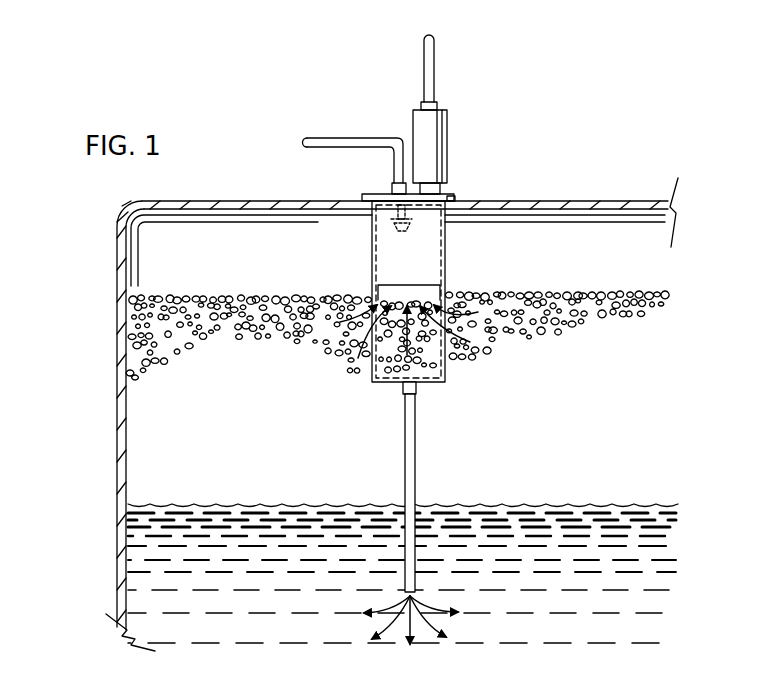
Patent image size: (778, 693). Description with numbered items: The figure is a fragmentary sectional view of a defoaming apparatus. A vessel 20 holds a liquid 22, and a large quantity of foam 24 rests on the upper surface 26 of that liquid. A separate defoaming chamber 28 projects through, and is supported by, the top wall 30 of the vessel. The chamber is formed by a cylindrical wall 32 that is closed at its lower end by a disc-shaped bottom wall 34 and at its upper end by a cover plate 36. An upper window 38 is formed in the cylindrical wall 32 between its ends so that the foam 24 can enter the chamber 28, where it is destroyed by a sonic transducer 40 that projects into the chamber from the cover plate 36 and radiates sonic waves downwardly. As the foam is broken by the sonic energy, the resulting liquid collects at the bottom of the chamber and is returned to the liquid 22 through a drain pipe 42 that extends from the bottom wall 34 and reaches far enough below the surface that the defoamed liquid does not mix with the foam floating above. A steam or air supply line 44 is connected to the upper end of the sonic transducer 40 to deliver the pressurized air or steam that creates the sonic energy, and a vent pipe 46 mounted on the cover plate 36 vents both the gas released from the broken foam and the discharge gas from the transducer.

The vessel 20 is at (117, 428).
The liquid 22 is at (222, 607).
The foam 24 is at (180, 296).
The upper surface 26 is at (190, 508).
The defoaming chamber 28 is at (450, 232).
The top wall 30 is at (575, 200).
The cylindrical wall 32 is at (372, 267).
The bottom wall 34 is at (425, 389).
The cover plate 36 is at (452, 194).
The upper window 38 is at (425, 286).
The sonic transducer 40 is at (395, 222).
The drain pipe 42 is at (416, 465).
The steam or air supply line 44 is at (335, 138).
The vent pipe 46 is at (437, 83).